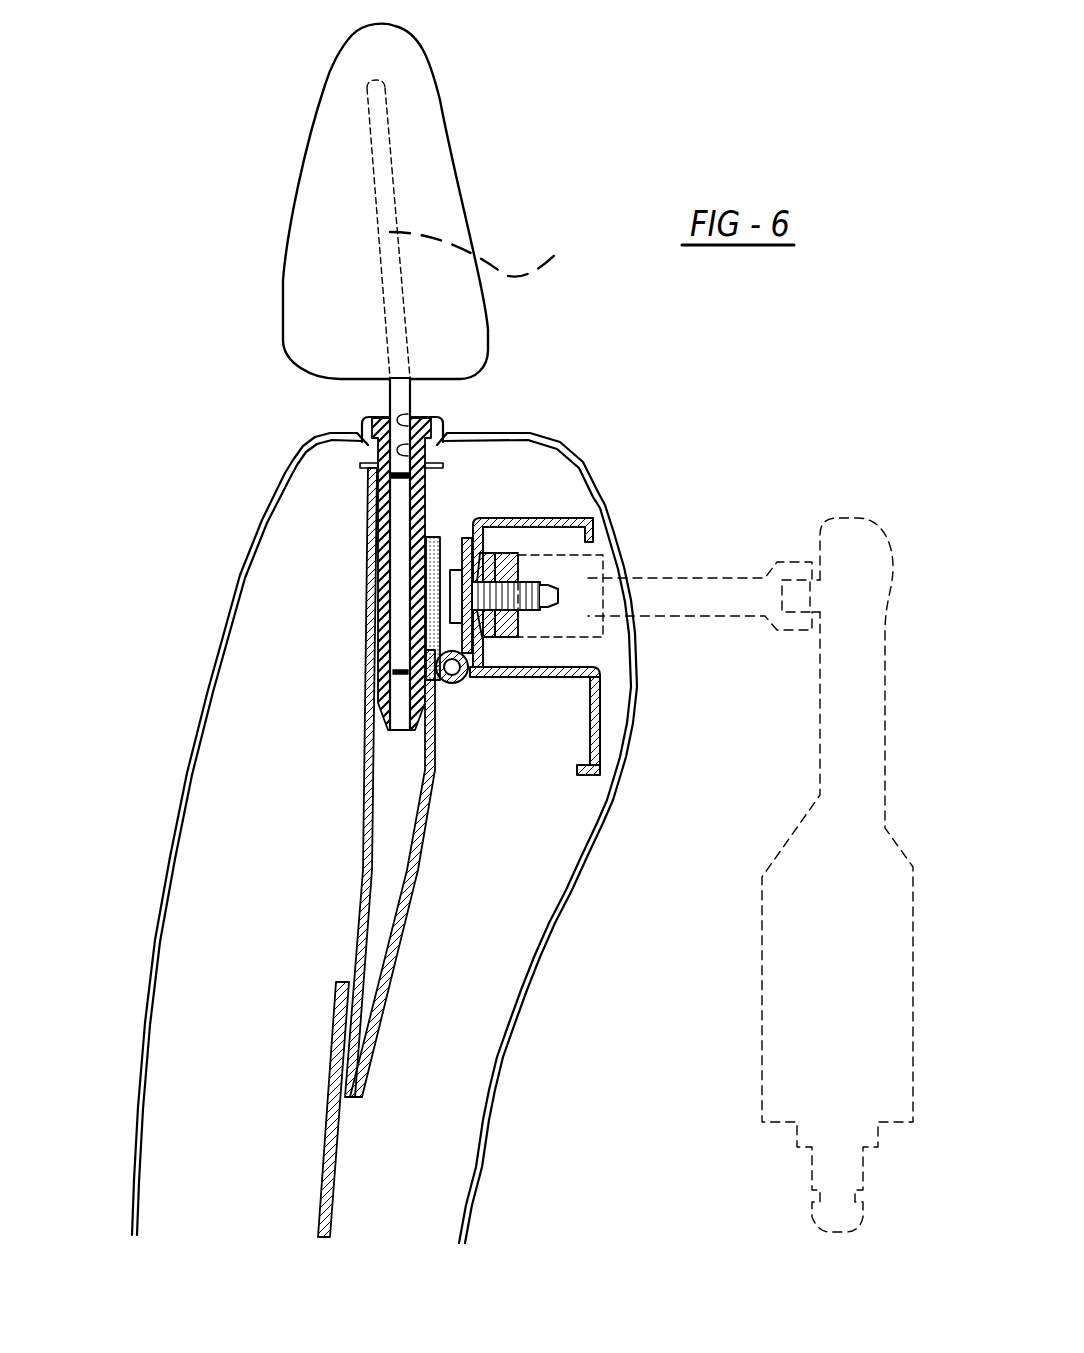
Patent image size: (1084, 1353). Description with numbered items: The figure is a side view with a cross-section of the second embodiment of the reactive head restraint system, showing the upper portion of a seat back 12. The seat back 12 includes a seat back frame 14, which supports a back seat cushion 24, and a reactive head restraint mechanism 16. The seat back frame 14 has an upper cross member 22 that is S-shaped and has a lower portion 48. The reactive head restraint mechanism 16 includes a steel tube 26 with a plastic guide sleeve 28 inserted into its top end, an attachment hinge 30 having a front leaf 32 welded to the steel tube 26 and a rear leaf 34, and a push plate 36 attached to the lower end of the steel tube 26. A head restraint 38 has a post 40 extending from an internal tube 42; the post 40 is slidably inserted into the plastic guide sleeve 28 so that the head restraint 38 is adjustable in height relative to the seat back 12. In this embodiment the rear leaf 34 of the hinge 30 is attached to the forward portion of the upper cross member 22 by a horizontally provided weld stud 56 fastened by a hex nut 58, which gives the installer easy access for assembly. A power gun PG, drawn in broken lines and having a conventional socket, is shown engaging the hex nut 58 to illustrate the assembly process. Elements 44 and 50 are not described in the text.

The seat back 12 is at (188, 773).
The seat back frame 14 is at (593, 535).
The reactive head restraint mechanism 16 is at (367, 917).
The upper cross member 22 is at (600, 722).
The back seat cushion 24 is at (236, 1063).
The steel tube 26 is at (362, 882).
The plastic guide sleeve 28 is at (372, 492).
The attachment hinge 30 is at (410, 623).
The front leaf 32 is at (443, 540).
The rear leaf 34 is at (482, 553).
The push plate 36 is at (323, 1152).
The head restraint 38 is at (418, 115).
The post 40 is at (400, 396).
The internal tube 42 is at (484, 250).
The bracket flange 44 is at (552, 518).
The lower portion 48 is at (555, 667).
The lip 50 is at (598, 748).
The weld stud 56 is at (509, 563).
The hex nut 58 is at (535, 590).
The power gun PG is at (797, 967).